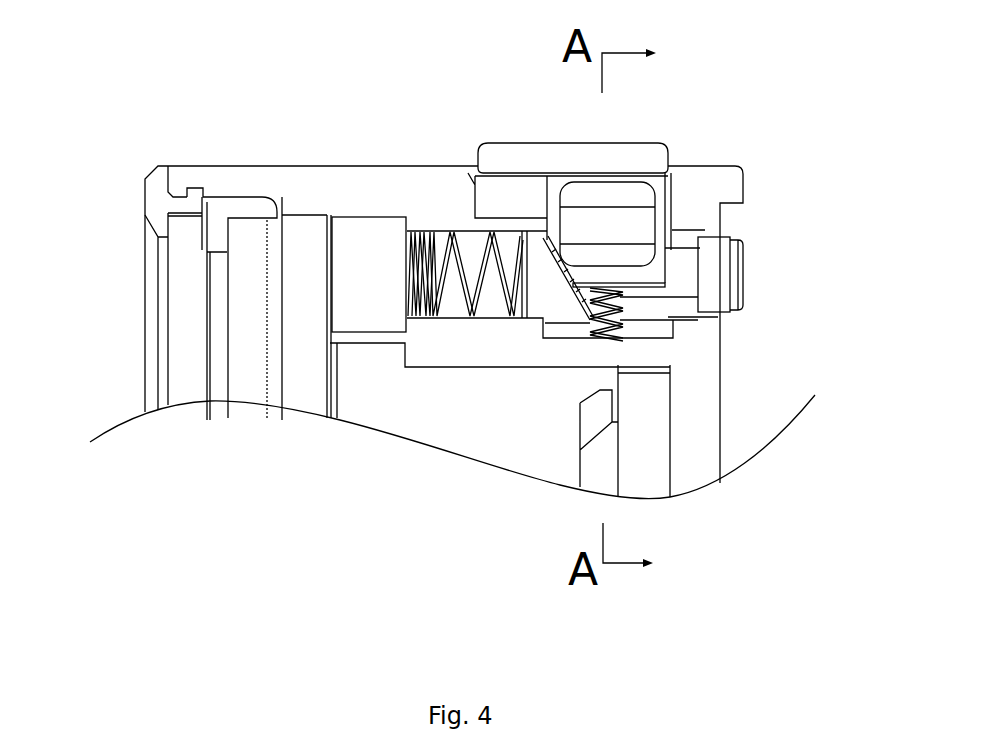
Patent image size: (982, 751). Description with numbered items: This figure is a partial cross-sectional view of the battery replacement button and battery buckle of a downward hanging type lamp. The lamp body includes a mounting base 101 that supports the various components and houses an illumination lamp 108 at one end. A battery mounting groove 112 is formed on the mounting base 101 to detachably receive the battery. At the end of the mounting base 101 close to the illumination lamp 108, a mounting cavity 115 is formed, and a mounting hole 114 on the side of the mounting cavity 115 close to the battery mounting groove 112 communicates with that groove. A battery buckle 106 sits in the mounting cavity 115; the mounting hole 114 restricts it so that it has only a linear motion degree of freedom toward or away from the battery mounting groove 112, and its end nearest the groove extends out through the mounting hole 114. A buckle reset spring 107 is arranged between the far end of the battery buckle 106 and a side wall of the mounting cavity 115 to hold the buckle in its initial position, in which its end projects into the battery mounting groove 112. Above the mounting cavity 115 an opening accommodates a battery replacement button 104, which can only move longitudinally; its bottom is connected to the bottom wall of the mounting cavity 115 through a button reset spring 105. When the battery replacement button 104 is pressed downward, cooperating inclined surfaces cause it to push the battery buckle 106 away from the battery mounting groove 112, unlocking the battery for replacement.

The mounting base 101 is at (309, 193).
The battery replacement button 104 is at (557, 185).
The button reset spring 105 is at (620, 338).
The battery buckle 106 is at (685, 285).
The buckle reset spring 107 is at (437, 237).
The illumination lamp 108 is at (162, 293).
The battery mounting groove 112 is at (722, 377).
The mounting hole 114 is at (710, 232).
The mounting cavity 115 is at (585, 323).